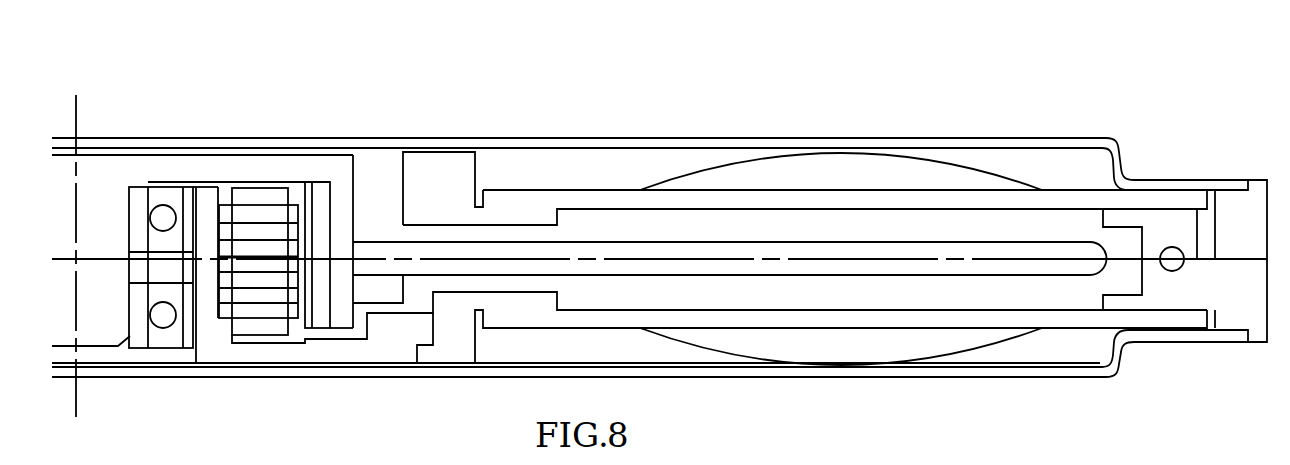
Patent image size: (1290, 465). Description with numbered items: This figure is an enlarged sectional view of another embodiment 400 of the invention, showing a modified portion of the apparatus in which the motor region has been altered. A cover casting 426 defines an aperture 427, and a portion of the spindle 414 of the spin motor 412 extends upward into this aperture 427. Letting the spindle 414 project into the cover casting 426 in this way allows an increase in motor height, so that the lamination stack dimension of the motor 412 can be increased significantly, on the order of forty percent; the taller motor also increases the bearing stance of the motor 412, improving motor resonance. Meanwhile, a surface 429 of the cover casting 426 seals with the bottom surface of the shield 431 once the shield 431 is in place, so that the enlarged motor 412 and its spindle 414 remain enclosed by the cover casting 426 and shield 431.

The embodiment 400 is at (766, 73).
The spin motor 412 is at (256, 362).
The spindle 414 is at (213, 165).
The cover casting 426 is at (458, 168).
The aperture 427 is at (402, 182).
The surface 429 is at (429, 152).
The shield 431 is at (553, 142).